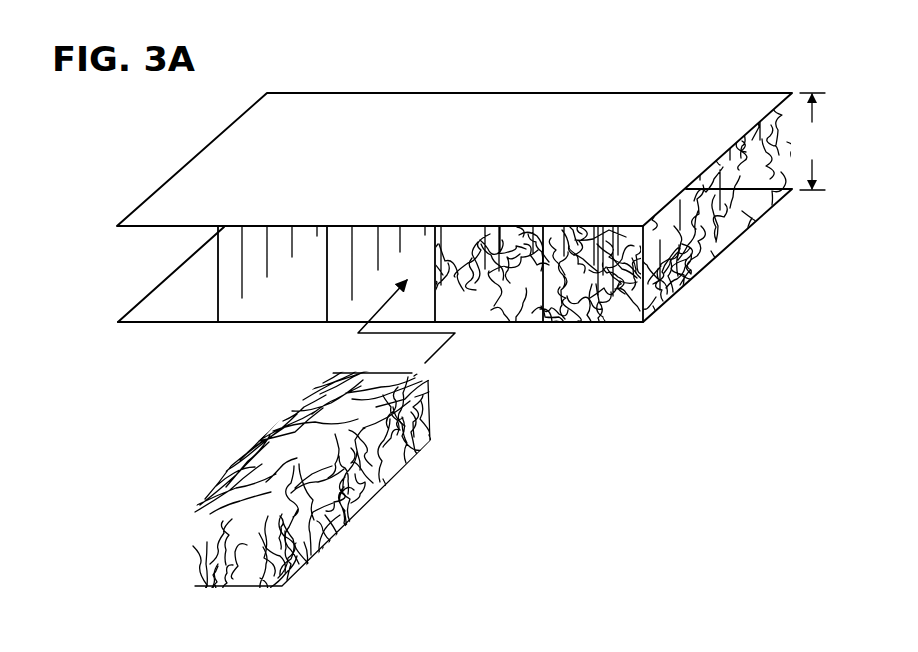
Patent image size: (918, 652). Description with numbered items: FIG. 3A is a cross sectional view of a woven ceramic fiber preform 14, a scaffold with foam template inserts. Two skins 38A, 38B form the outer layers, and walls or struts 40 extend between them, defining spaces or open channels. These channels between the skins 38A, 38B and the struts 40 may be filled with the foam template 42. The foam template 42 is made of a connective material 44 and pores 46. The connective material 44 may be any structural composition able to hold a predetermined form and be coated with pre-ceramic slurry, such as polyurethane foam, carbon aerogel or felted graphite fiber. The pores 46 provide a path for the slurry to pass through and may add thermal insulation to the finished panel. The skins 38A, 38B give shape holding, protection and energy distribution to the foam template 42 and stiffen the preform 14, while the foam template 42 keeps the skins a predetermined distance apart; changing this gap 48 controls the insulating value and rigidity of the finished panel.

The preform 14 is at (449, 86).
The skin 38A is at (155, 210).
The skin 38B is at (140, 308).
The walls or struts 40 is at (217, 298).
The foam template 42 is at (421, 483).
The connective material 44 is at (518, 322).
The pores 46 is at (490, 322).
The gap 48 is at (812, 141).